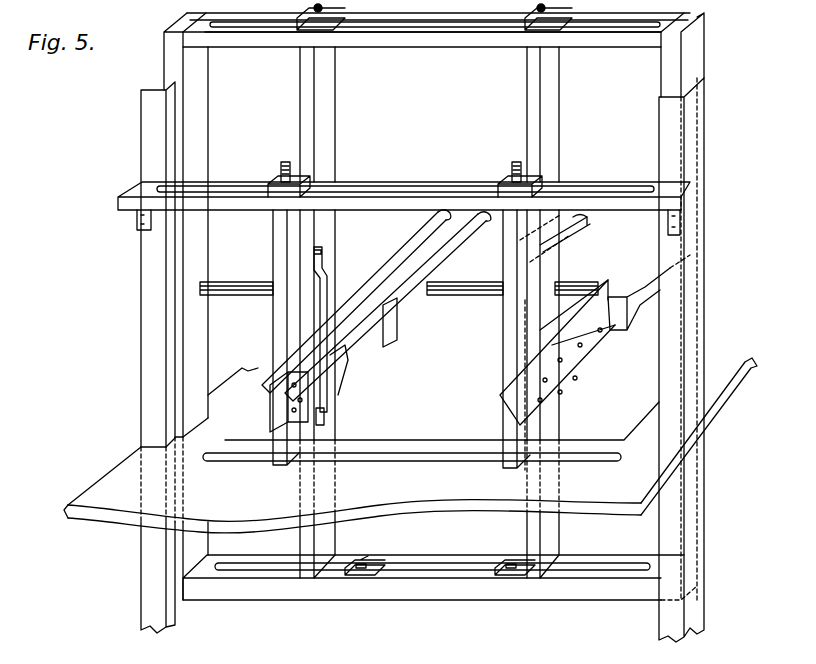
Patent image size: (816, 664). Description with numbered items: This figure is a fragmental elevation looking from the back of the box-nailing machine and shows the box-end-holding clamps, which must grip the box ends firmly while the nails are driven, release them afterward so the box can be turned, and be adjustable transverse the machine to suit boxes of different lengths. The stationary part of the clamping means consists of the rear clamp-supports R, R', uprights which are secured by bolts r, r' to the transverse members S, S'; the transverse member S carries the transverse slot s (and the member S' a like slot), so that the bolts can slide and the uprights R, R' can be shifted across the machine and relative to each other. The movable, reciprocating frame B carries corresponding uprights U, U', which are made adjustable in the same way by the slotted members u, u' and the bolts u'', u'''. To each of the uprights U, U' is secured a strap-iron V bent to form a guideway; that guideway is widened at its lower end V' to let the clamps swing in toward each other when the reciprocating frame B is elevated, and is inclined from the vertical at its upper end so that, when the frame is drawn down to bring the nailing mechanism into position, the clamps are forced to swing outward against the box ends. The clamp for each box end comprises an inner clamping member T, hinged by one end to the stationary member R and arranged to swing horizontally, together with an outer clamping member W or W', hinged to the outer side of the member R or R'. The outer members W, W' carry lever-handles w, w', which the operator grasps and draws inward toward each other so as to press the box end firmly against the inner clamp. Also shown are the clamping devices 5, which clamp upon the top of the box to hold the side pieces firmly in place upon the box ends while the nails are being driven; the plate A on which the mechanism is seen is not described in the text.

The movable frame B is at (172, 48).
The slotted member u is at (439, 16).
The bolt u'' is at (317, 16).
The bolt u''' is at (555, 16).
The upright U is at (304, 312).
The upright U' is at (527, 312).
The bolt r is at (289, 171).
The bolt r' is at (518, 171).
The transverse member S is at (401, 189).
The transverse slot s is at (244, 188).
The rear clamp-support R is at (273, 337).
The rear clamp-support R' is at (503, 340).
The slotted member u' is at (433, 568).
The transverse member S' is at (412, 442).
The table plate A is at (135, 458).
The outer clamping member W is at (354, 322).
The lever-handle w is at (385, 307).
The clamping device 5 is at (430, 217).
The inner clamping member T is at (390, 338).
The bent rod V'' is at (307, 329).
The widened lower end of guideway V' is at (340, 380).
The strap-iron V is at (324, 421).
The outer clamping member W' is at (557, 320).
The lever-handle w' is at (649, 292).